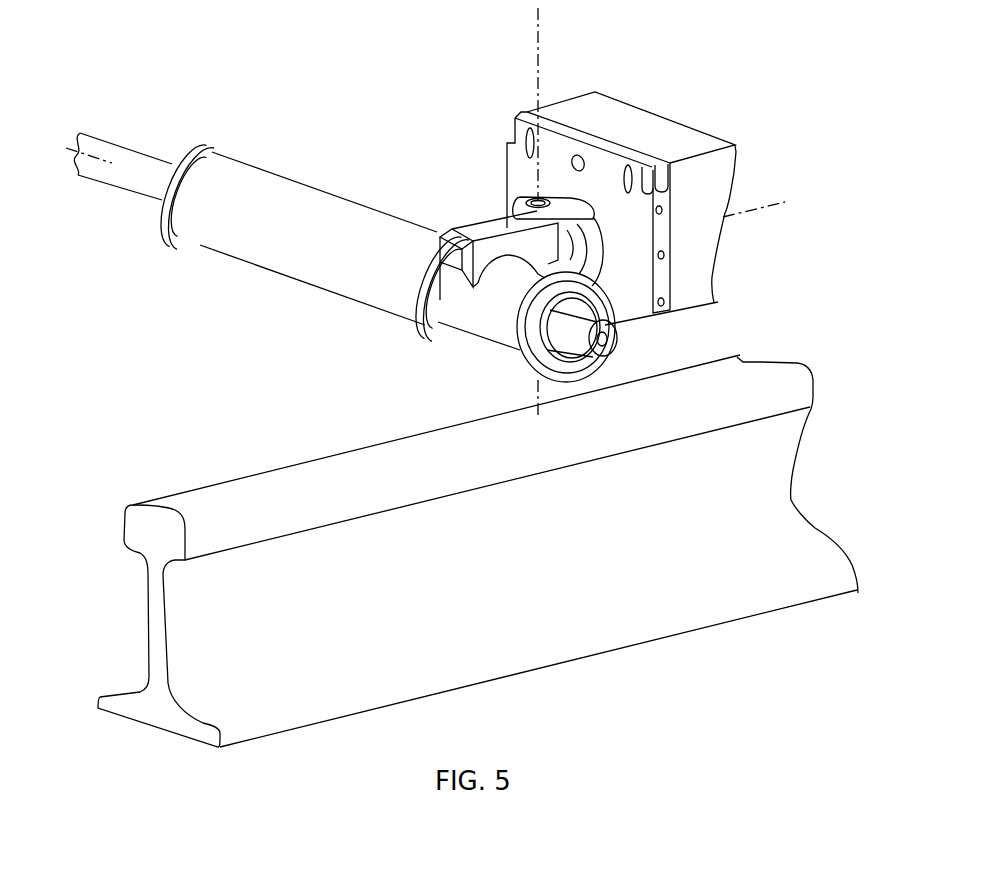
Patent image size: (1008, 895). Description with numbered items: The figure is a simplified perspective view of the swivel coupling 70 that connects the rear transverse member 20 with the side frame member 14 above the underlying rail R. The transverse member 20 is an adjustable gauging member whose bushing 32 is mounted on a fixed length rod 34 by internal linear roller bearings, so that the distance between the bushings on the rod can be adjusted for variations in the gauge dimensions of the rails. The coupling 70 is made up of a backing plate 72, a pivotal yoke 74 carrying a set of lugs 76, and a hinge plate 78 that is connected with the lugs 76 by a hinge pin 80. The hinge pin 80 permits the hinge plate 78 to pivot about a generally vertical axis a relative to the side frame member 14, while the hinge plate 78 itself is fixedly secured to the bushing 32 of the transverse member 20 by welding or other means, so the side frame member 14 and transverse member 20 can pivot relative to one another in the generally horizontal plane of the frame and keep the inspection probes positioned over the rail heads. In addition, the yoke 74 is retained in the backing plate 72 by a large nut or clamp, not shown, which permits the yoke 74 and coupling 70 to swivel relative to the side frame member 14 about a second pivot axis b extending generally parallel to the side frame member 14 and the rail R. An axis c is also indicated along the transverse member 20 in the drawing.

The swivel coupling 70 is at (430, 68).
The side frame member 14 is at (644, 118).
The backing plate 72 is at (660, 310).
The hinge pin 80 is at (537, 202).
The lugs 76 is at (517, 209).
The hinge plate 78 is at (487, 232).
The bushing 32 is at (287, 178).
The rear transverse member 20 is at (160, 294).
The pivotal yoke 74 is at (600, 262).
The fixed length rod 34 is at (605, 352).
The rail R is at (197, 495).
The vertical axis a is at (537, 32).
The second pivot axis b is at (773, 203).
The cylinder axis c is at (87, 145).